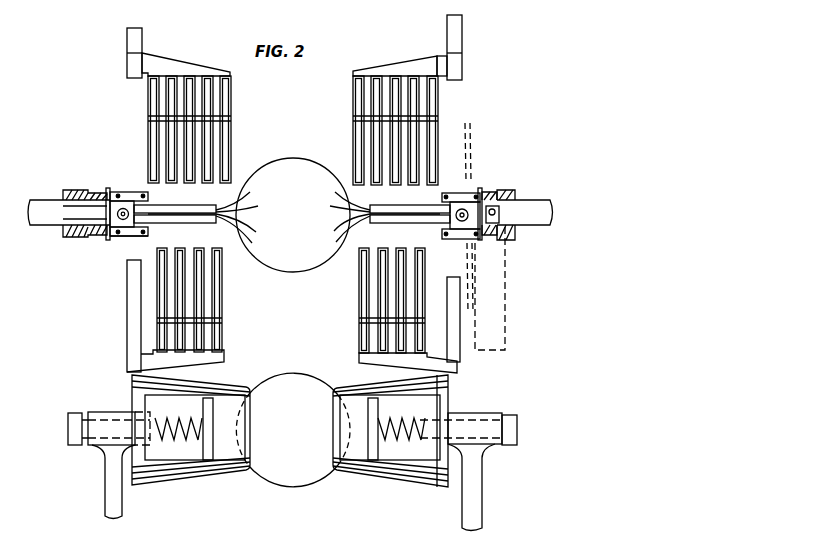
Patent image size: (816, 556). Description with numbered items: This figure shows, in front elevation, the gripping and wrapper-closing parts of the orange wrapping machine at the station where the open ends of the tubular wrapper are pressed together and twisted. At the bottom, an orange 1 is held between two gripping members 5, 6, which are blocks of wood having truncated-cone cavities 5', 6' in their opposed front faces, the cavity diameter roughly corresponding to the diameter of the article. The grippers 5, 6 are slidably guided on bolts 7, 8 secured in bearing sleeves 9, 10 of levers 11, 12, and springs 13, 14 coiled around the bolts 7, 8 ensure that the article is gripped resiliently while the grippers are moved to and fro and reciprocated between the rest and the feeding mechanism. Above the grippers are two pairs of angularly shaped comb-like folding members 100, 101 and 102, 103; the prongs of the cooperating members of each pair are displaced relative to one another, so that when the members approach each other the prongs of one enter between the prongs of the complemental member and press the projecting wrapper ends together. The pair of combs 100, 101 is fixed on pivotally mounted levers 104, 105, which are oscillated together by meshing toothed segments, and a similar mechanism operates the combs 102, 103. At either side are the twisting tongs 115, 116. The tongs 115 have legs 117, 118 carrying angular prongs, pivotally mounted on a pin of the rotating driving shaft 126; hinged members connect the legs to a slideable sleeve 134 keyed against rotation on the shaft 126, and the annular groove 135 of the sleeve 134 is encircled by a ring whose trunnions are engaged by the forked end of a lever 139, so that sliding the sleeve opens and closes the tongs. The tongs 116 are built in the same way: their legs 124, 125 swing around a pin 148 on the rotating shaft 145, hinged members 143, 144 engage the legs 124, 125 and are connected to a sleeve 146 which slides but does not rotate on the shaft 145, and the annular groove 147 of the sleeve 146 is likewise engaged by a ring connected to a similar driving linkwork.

The orange 1 is at (292, 486).
The gripping member 5 is at (390, 441).
The cavity 5' is at (330, 404).
The gripping member 6 is at (191, 441).
The cavity 6' is at (258, 405).
The bolt 7 is at (432, 472).
The bolt 8 is at (163, 452).
The bearing sleeve 9 is at (480, 413).
The bearing sleeve 10 is at (113, 412).
The lever 11 is at (482, 505).
The lever 12 is at (106, 500).
The spring 13 is at (415, 452).
The spring 14 is at (190, 462).
The comb-like folding member 100 is at (400, 62).
The comb-like folding member 101 is at (395, 367).
The comb-like folding member 102 is at (178, 64).
The comb-like folding member 103 is at (272, 374).
The lever 104 is at (455, 35).
The lever 105 is at (455, 338).
The twisting tongs 115 is at (448, 228).
The twisting tongs 116 is at (132, 192).
The tong leg 117 is at (412, 206).
The tong leg 118 is at (384, 223).
The tong leg 124 is at (164, 206).
The tong leg 125 is at (164, 222).
The driving shaft 126 is at (535, 220).
The slideable sleeve 134 is at (513, 196).
The annular groove 135 is at (494, 191).
The lever 139 is at (500, 284).
The hinged member 143 is at (108, 192).
The hinged member 144 is at (122, 238).
The shaft 145 is at (37, 199).
The sleeve 146 is at (66, 232).
The annular groove 147 is at (90, 240).
The pin 148 is at (108, 215).